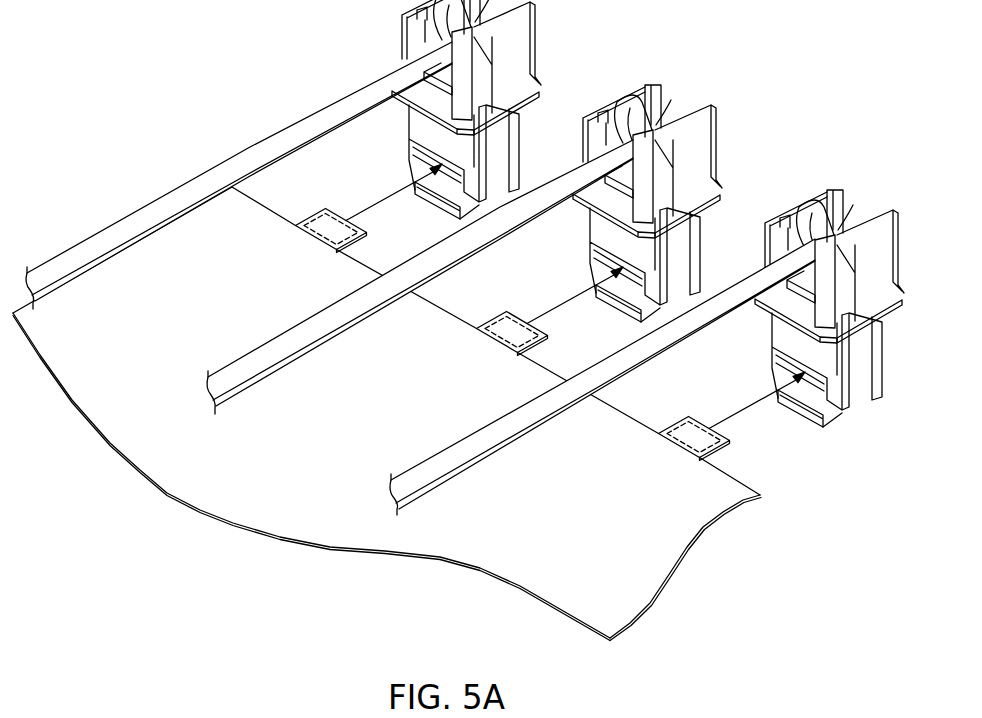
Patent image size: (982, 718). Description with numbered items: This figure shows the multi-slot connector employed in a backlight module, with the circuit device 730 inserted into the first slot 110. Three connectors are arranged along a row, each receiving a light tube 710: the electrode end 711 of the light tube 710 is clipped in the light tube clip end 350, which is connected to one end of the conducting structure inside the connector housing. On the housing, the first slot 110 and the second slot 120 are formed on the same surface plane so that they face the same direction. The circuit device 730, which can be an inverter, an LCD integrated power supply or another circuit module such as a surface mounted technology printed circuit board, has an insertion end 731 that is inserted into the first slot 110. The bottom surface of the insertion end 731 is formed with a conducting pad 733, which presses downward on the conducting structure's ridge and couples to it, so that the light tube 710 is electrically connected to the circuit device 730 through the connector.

The light tube 710 is at (268, 148).
The electrode end 711 is at (838, 232).
The light tube clip end 350 is at (812, 218).
The first slot 110 is at (820, 383).
The second slot 120 is at (797, 408).
The circuit device 730 is at (575, 585).
The insertion end 731 is at (741, 500).
The conducting pad 733 is at (675, 417).